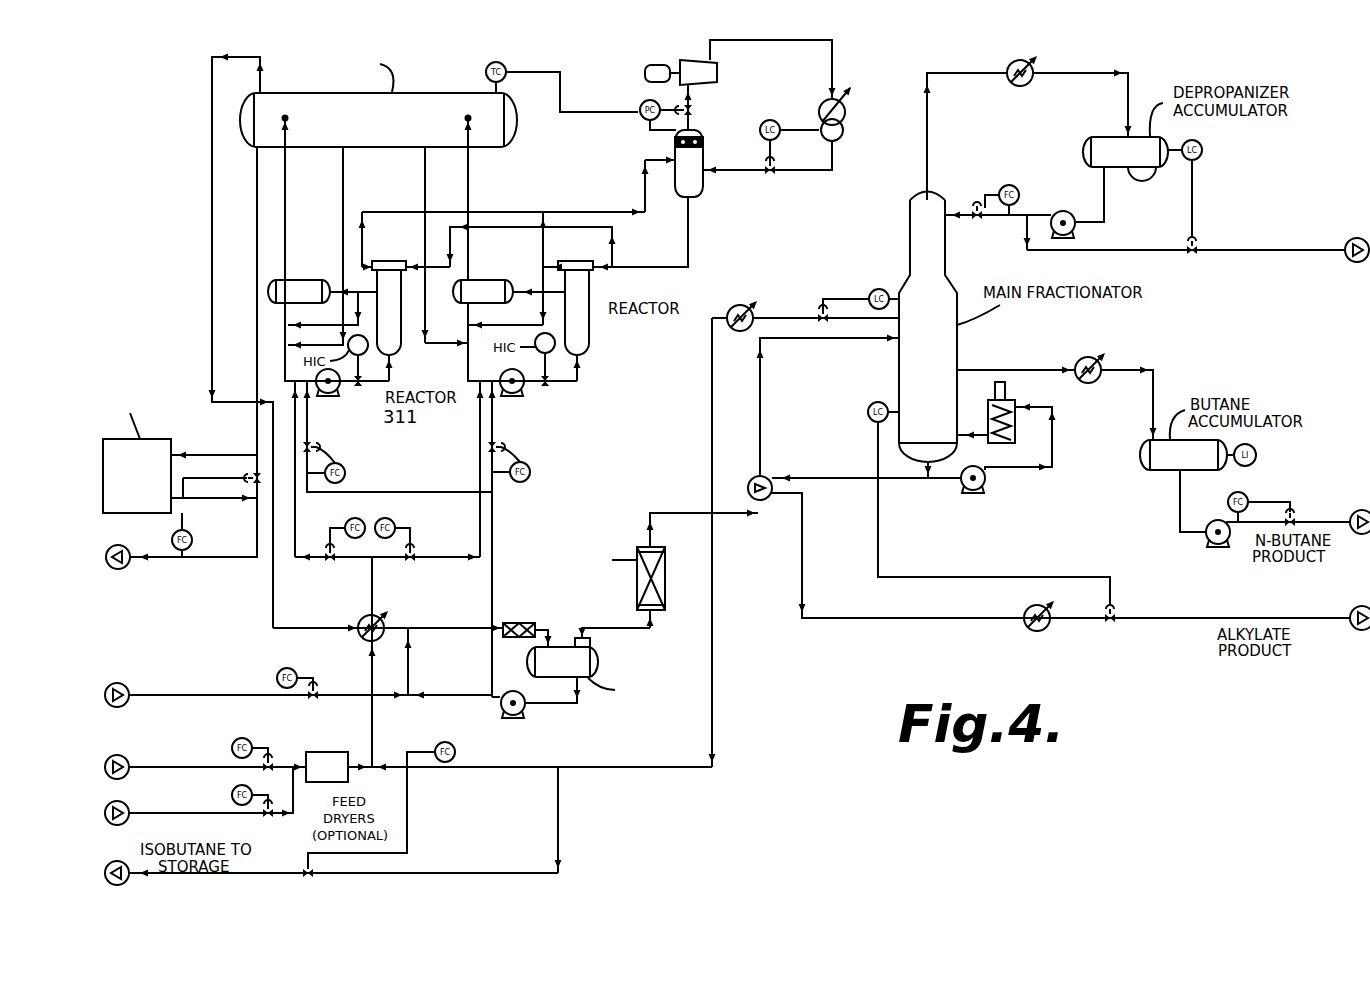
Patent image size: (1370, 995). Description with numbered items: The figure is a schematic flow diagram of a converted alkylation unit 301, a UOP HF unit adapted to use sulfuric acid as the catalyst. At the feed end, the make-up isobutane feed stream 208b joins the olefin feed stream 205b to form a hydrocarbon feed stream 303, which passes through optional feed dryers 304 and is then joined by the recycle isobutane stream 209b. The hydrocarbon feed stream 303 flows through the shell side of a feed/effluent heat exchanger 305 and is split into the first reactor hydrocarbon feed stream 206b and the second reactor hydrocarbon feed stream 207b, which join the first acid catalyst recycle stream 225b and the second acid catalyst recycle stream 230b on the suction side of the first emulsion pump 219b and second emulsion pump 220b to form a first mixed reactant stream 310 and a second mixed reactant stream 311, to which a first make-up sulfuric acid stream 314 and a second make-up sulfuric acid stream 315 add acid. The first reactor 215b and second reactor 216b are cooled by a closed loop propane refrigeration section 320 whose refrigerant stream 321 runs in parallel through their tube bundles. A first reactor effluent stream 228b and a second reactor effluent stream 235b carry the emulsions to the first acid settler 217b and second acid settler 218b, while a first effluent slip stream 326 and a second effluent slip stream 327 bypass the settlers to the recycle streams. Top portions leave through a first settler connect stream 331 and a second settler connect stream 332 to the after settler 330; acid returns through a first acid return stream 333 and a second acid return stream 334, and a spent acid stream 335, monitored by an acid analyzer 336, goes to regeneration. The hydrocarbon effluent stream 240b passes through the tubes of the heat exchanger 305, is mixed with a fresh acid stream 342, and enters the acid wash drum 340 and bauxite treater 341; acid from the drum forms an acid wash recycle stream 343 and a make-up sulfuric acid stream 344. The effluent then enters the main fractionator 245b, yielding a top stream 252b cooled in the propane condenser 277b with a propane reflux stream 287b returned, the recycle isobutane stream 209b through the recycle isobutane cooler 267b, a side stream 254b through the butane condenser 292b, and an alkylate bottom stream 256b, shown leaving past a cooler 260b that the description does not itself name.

The after settler 330 is at (423, 92).
The hydrocarbon effluent stream 240b is at (211, 257).
The spent acid stream 335 is at (256, 230).
The second settler connect stream 332 is at (310, 199).
The second acid return stream 334 is at (345, 190).
The first acid return stream 333 is at (425, 175).
The first acid catalyst recycle stream 225b is at (463, 341).
The first settler connect stream 331 is at (469, 195).
The second acid settler 218b is at (300, 280).
The second reactor effluent stream 235b is at (352, 290).
The refrigerant stream 321 is at (560, 211).
The first reactor effluent stream 228b is at (550, 266).
The first acid settler 217b is at (470, 280).
The second effluent slip stream 327 is at (330, 330).
The first effluent slip stream 326 is at (480, 330).
The second reactor 216b is at (404, 338).
The first reactor 215b is at (592, 346).
The second mixed reactant stream 311 is at (300, 383).
The first mixed reactant stream 310 is at (607, 395).
The second acid catalyst recycle stream 230b is at (283, 361).
The second emulsion pump 220b is at (342, 406).
The second make-up sulfuric acid stream 315 is at (307, 430).
The first make-up sulfuric acid stream 314 is at (492, 428).
The first emulsion pump 219b is at (525, 397).
The make-up sulfuric acid stream 344 is at (493, 522).
The second reactor hydrocarbon feed stream 207b is at (312, 565).
The first reactor hydrocarbon feed stream 206b is at (428, 565).
The feed/effluent heat exchanger 305 is at (383, 625).
The acid wash recycle stream 343 is at (410, 672).
The fresh acid stream 342 is at (167, 698).
The olefin feed stream 205b is at (210, 765).
The make-up isobutane feed stream 208b is at (232, 815).
The feed dryers 304 is at (352, 768).
The hydrocarbon feed stream 303 is at (305, 753).
The recycle isobutane stream 209b is at (712, 442).
The bauxite treater 341 is at (668, 605).
The acid wash drum 340 is at (583, 680).
The acid analyzer 336 is at (165, 440).
The closed loop propane refrigeration section 320 is at (737, 186).
The recycle isobutane cooler 267b is at (745, 306).
The top stream 252b is at (928, 145).
The propane condenser 277b is at (1007, 66).
The main fractionator 245b is at (909, 245).
The propane reflux stream 287b is at (997, 218).
The side stream 254b is at (1010, 369).
The butane condenser 292b is at (1080, 357).
The bottom stream 256b is at (935, 462).
The alkylate cooler 260b is at (1048, 630).
The converted alkylation unit 301 is at (765, 746).